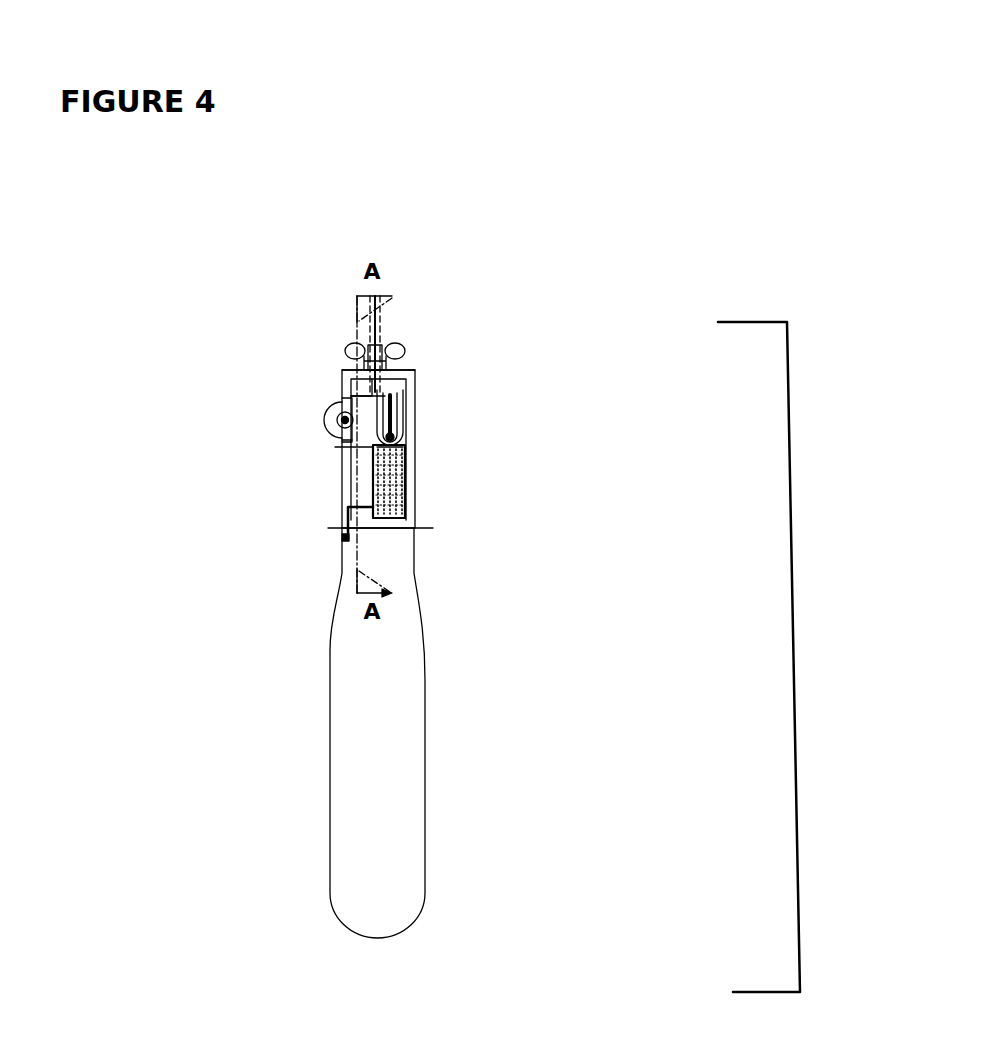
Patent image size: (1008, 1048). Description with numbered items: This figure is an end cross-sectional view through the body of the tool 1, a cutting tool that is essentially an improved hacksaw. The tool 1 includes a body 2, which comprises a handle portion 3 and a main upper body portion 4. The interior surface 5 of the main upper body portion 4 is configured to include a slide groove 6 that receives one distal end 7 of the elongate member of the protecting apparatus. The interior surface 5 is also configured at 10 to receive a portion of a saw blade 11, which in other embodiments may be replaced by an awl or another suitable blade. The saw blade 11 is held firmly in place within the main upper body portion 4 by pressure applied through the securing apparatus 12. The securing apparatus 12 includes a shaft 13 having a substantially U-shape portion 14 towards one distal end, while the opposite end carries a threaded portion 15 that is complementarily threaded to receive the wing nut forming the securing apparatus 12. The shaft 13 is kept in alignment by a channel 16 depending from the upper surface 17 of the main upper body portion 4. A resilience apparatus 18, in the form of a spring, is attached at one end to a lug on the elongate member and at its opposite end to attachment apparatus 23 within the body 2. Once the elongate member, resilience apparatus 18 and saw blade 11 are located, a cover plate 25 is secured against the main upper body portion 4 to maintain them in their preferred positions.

The tool 1 is at (565, 132).
The body 2 is at (792, 609).
The handle portion 3 is at (407, 877).
The main upper body portion 4 is at (415, 482).
The interior surface 5 is at (402, 450).
The slide groove 6 is at (405, 502).
The distal end of the elongate member 7 is at (343, 536).
The blade-receiving configuration 10 is at (393, 415).
The saw blade 11 is at (392, 440).
The securing apparatus 12 is at (398, 348).
The shaft 13 is at (345, 448).
The U-shape portion 14 is at (362, 452).
The threaded portion 15 is at (376, 352).
The channel 16 is at (385, 393).
The upper surface 17 is at (343, 371).
The resilience apparatus 18 is at (335, 428).
The attachment apparatus 23 is at (327, 420).
The cover plate 25 is at (338, 437).